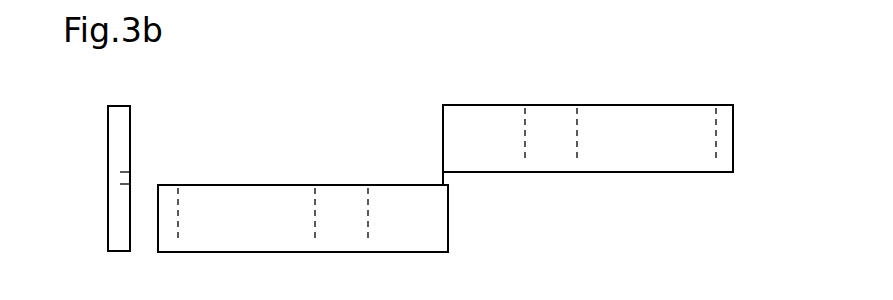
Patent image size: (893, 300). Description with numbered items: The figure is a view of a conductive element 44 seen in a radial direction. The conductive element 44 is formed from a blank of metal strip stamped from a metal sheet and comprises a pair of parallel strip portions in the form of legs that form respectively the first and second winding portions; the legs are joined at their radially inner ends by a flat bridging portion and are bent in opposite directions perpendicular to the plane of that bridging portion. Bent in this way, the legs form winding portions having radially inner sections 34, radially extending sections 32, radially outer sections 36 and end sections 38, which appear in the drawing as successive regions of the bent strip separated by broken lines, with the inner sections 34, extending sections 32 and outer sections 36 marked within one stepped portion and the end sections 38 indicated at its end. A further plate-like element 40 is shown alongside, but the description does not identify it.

The first plate member 40 is at (122, 131).
The conductive element 44 is at (350, 152).
The end sections 38 is at (618, 138).
The radially inner sections 34 is at (500, 148).
The radially extending sections 32 is at (565, 148).
The radially outer sections 36 is at (655, 148).